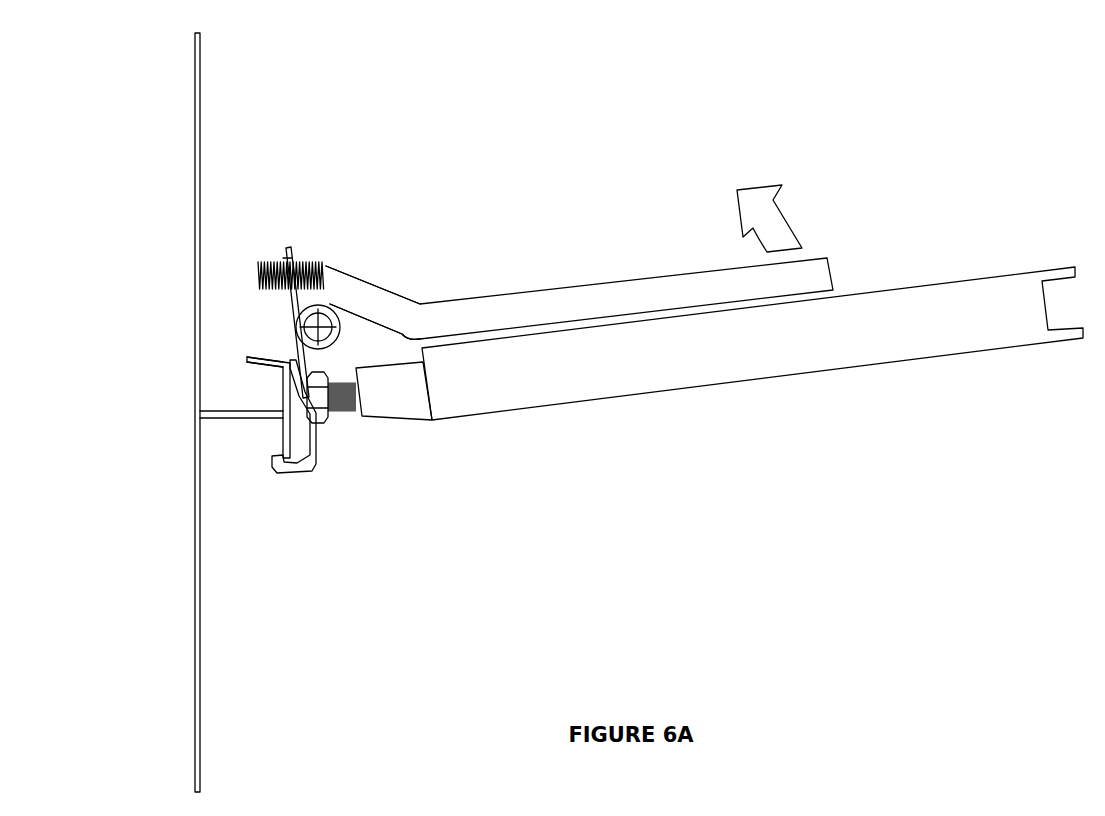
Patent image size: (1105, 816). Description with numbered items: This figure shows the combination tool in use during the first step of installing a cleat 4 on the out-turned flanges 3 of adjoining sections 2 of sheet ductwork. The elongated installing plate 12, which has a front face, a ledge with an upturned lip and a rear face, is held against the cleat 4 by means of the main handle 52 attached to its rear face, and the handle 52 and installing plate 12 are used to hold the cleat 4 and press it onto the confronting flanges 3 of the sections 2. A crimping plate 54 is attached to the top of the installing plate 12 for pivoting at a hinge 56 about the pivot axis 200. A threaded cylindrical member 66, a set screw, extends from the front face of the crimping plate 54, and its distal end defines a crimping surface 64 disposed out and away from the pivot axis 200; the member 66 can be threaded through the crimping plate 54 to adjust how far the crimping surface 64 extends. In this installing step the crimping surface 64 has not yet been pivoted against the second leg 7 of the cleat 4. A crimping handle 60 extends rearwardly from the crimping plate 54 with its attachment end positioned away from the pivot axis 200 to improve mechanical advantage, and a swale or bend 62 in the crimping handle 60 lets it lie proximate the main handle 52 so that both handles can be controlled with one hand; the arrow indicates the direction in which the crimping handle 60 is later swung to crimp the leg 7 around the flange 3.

The ductwork section 2 is at (194, 325).
The flange 3 is at (280, 385).
The cleat 4 is at (300, 452).
The second leg of cleat 7 is at (247, 362).
The installing plate 12 is at (310, 435).
The handle 52 is at (918, 338).
The crimping plate 54 is at (289, 250).
The hinge 56 is at (382, 343).
The crimping handle 60 is at (580, 293).
The bend 62 is at (427, 305).
The crimping surface 64 is at (258, 278).
The threaded cylindrical member 66 is at (283, 256).
The pivot axis 200 is at (318, 327).